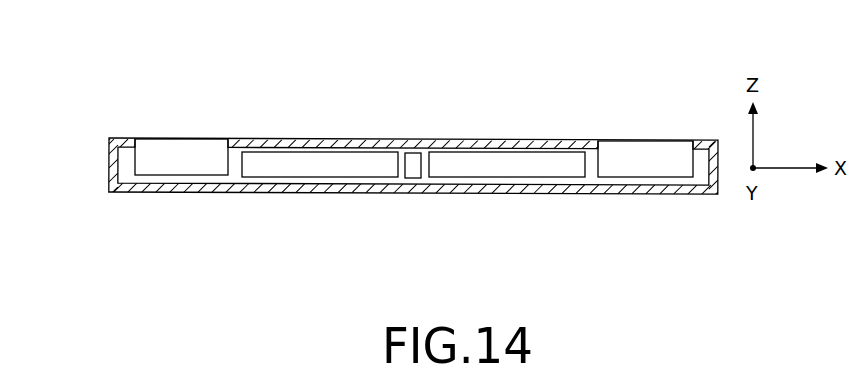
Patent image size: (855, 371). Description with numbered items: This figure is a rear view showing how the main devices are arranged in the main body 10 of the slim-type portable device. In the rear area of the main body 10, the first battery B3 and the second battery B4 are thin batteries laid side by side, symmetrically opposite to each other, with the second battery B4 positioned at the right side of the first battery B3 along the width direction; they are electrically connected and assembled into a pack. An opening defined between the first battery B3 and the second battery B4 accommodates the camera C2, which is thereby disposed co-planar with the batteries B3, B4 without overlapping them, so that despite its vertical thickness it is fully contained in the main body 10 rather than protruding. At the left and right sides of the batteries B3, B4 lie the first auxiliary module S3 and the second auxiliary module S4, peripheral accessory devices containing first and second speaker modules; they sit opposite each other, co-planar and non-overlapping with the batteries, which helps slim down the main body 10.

The main body 10 is at (109, 158).
The second auxiliary module S4 is at (190, 148).
The second battery B4 is at (330, 163).
The camera C2 is at (415, 160).
The first battery B3 is at (493, 163).
The first auxiliary module S3 is at (648, 153).